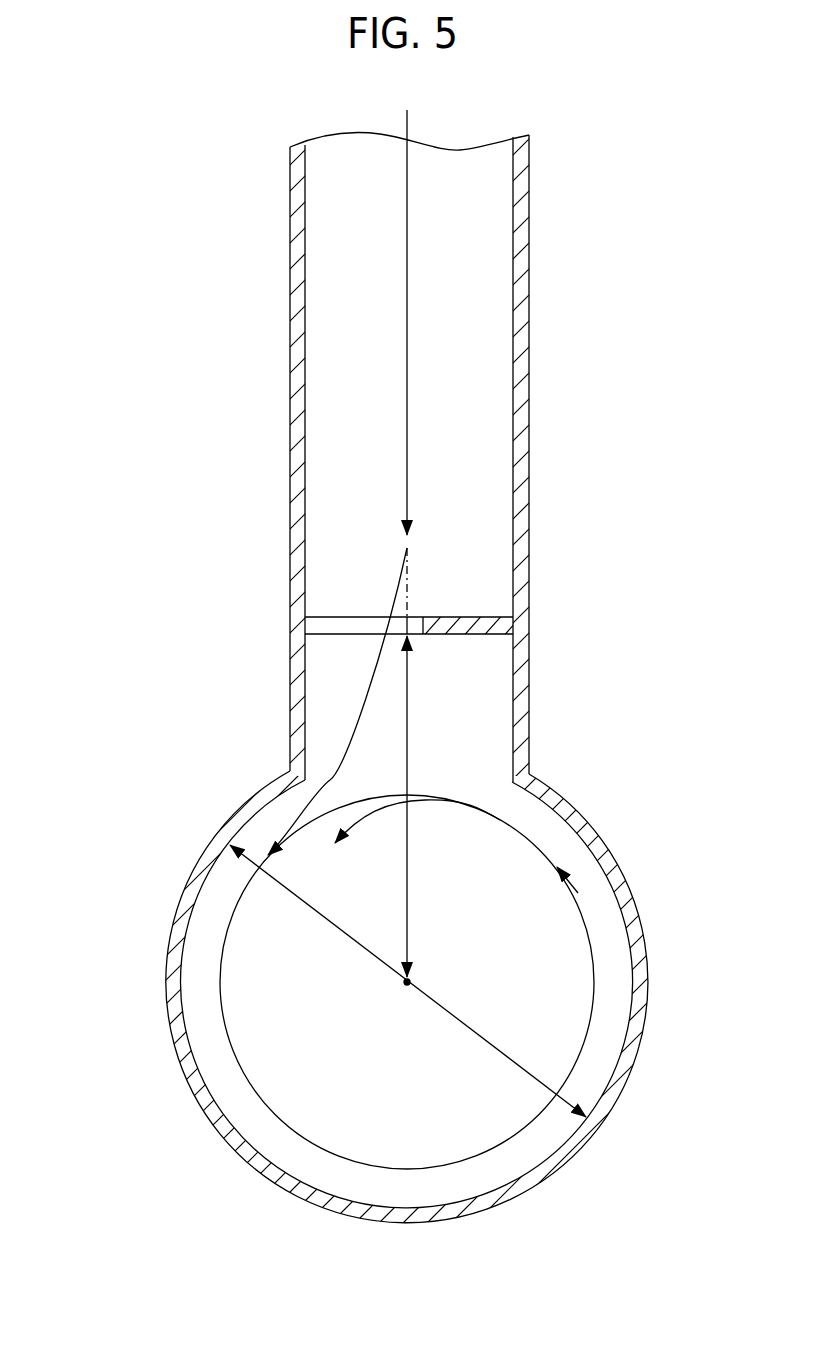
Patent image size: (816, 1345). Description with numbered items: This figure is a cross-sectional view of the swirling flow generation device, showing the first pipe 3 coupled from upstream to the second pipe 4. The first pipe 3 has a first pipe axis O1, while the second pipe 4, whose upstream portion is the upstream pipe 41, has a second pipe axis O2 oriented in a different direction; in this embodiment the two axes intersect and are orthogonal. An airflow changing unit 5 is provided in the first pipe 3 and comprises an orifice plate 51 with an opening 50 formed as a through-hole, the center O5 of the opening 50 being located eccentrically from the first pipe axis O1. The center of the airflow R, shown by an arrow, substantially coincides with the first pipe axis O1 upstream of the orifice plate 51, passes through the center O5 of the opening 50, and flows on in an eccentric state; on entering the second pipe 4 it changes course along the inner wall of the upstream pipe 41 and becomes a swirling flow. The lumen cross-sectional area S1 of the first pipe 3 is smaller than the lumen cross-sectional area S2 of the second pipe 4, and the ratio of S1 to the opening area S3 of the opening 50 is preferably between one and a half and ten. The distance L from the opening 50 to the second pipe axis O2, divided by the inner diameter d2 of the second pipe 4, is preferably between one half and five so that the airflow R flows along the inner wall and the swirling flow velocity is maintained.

The first pipe 3 is at (533, 428).
The second pipe 4 is at (166, 963).
The upstream pipe 41 is at (207, 853).
The airflow changing unit 5 is at (494, 640).
The opening 50 is at (342, 626).
The orifice plate 51 is at (496, 617).
The center of the opening O5 is at (388, 618).
The first pipe axis O1 is at (410, 305).
The second pipe axis O2 is at (410, 982).
The cross-sectional area of the lumen of the first pipe S1 is at (323, 262).
The cross-sectional area of the lumen of the second pipe S2 is at (593, 1062).
The opening area of the opening S3 is at (363, 626).
The distance from the opening to the second pipe axis L is at (409, 706).
The airflow R is at (573, 890).
The inner diameter of the second pipe d2 is at (527, 1067).